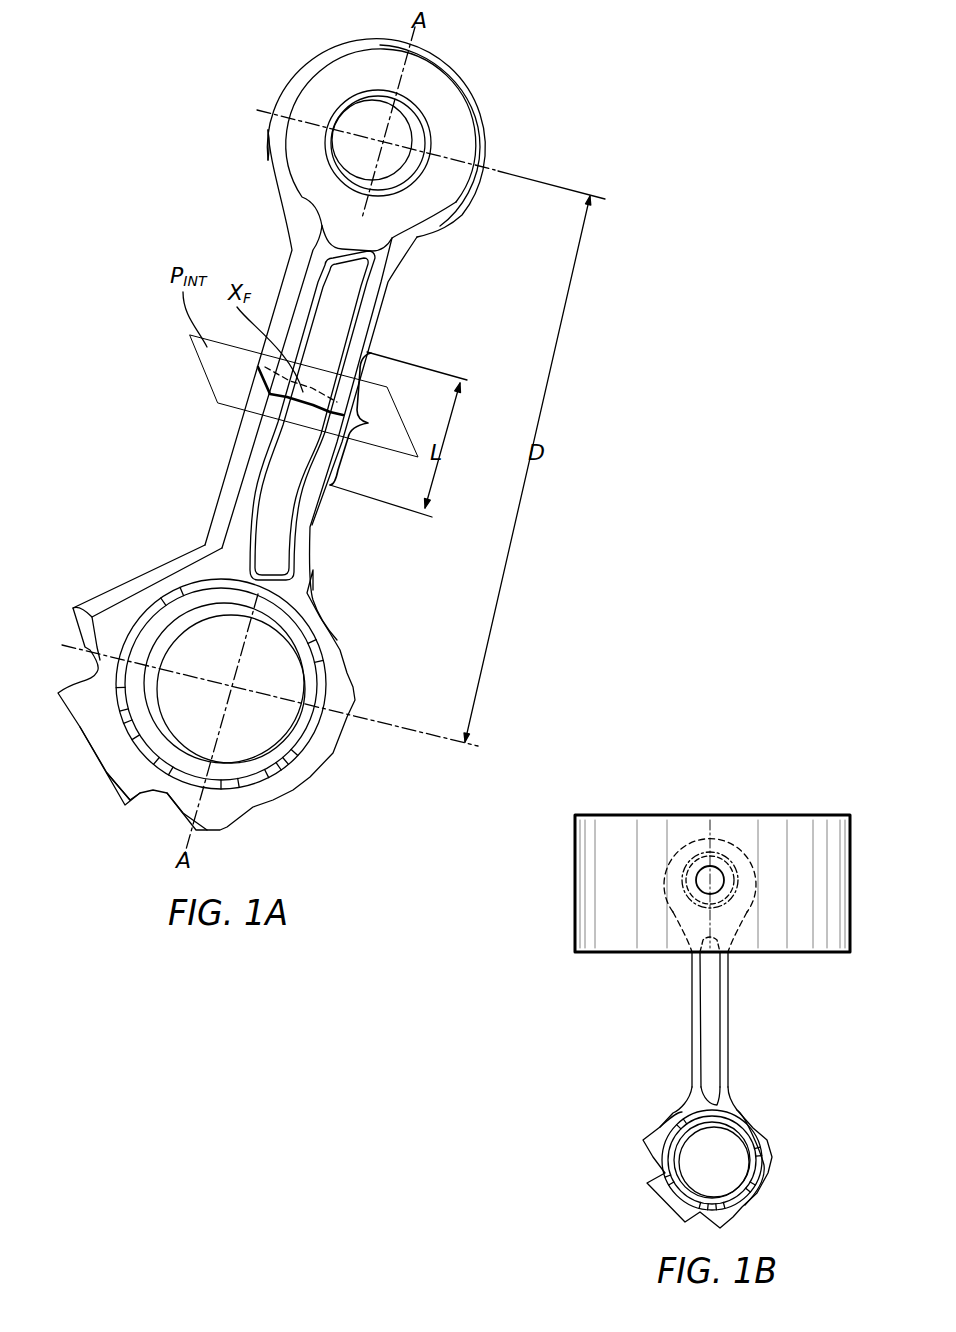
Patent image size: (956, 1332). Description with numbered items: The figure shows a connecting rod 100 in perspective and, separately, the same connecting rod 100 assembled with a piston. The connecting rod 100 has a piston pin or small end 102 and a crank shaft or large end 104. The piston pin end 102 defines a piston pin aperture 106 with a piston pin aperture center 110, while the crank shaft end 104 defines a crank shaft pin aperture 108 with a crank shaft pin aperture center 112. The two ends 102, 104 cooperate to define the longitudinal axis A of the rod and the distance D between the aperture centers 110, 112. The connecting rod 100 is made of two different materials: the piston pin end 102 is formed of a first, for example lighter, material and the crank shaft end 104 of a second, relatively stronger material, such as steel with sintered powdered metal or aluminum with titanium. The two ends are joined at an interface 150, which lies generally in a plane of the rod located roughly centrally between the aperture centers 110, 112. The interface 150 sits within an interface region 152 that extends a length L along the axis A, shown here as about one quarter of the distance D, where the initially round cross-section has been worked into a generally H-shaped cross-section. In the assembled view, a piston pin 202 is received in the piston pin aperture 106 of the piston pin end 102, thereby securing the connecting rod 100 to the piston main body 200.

In FIG. 1A, the connecting rod 100 is at (185, 222).
In FIG. 1B, the connecting rod 100 is at (627, 1163).
In FIG. 1A, the piston pin end 102 is at (505, 151).
In FIG. 1A, the crank shaft end 104 is at (298, 817).
In FIG. 1A, the piston pin aperture 106 is at (427, 100).
In FIG. 1A, the crank shaft pin aperture 108 is at (83, 732).
In FIG. 1A, the piston pin aperture center 110 is at (383, 140).
In FIG. 1A, the crank shaft pin aperture center 112 is at (200, 546).
In FIG. 1A, the interface 150 is at (260, 383).
In FIG. 1A, the interface region 152 is at (367, 419).
In FIG. 1B, the piston main body 200 is at (555, 890).
In FIG. 1B, the piston pin 202 is at (698, 872).